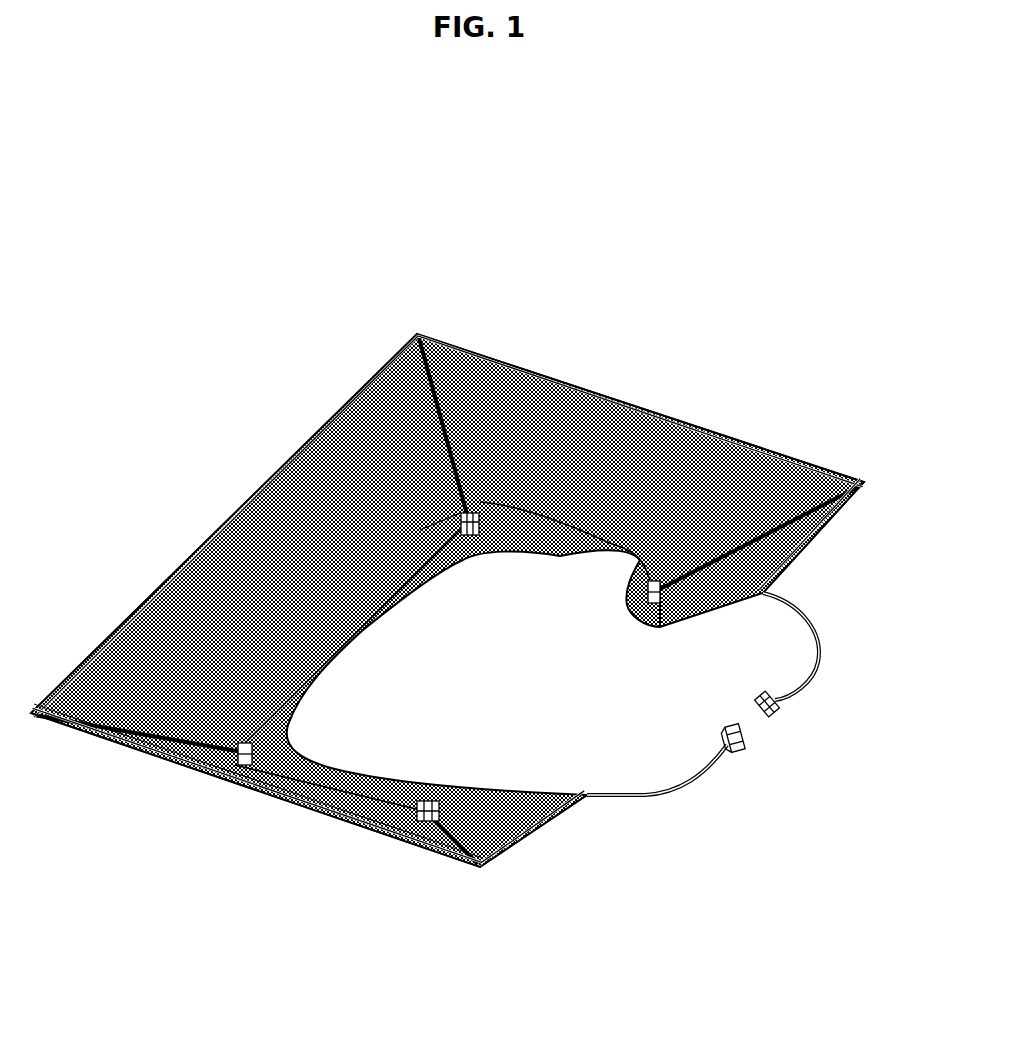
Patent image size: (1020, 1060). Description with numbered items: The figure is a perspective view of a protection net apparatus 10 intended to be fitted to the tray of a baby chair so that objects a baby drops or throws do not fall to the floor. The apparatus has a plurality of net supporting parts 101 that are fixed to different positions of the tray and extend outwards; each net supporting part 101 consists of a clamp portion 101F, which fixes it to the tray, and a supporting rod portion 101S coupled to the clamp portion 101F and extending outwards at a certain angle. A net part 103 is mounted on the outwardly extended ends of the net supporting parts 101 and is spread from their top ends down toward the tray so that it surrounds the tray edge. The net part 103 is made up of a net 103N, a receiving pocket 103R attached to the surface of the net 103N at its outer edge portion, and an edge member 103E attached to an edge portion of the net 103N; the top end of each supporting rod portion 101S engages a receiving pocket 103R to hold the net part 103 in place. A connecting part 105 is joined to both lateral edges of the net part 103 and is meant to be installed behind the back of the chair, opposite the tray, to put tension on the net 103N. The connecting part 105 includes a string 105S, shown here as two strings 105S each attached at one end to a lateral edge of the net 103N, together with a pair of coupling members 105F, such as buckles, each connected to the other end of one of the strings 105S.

The protection net apparatus 10 is at (662, 376).
The net supporting part 101 is at (272, 882).
The clamp portion 101F is at (377, 836).
The supporting rod portion 101S is at (435, 853).
The net part 103 is at (418, 279).
The net 103N is at (337, 413).
The edge member 103E is at (373, 368).
The receiving pocket 103R is at (415, 337).
The connecting part 105 is at (872, 752).
The coupling member 105F is at (745, 738).
The string 105S is at (700, 773).